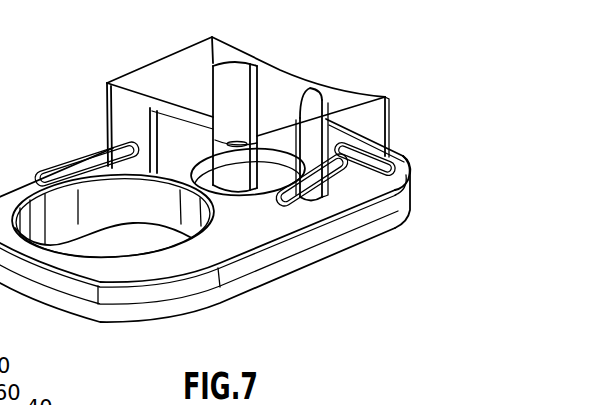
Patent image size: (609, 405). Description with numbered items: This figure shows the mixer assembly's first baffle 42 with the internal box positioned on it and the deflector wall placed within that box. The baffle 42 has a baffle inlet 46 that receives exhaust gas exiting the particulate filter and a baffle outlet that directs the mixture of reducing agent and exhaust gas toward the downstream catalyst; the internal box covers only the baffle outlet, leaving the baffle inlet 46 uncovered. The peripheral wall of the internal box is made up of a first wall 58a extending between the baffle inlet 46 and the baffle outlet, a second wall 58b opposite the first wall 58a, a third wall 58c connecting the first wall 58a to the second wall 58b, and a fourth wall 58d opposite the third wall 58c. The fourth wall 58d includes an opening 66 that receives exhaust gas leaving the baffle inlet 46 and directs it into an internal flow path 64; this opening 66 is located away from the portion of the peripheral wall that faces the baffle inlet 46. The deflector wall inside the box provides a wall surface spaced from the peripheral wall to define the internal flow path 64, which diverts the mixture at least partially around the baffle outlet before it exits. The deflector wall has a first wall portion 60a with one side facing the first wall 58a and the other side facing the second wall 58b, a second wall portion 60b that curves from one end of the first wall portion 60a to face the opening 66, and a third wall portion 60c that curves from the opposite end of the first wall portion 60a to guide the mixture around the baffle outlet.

The first baffle 42 is at (168, 263).
The baffle inlet 46 is at (87, 262).
The first wall 58a is at (113, 147).
The second wall 58b is at (367, 120).
The third wall 58c is at (143, 80).
The fourth wall 58d is at (273, 207).
The first wall portion 60a is at (282, 103).
The second wall portion 60b is at (365, 158).
The third wall portion 60c is at (217, 62).
The internal flow path 64 is at (387, 215).
The opening 66 is at (316, 165).